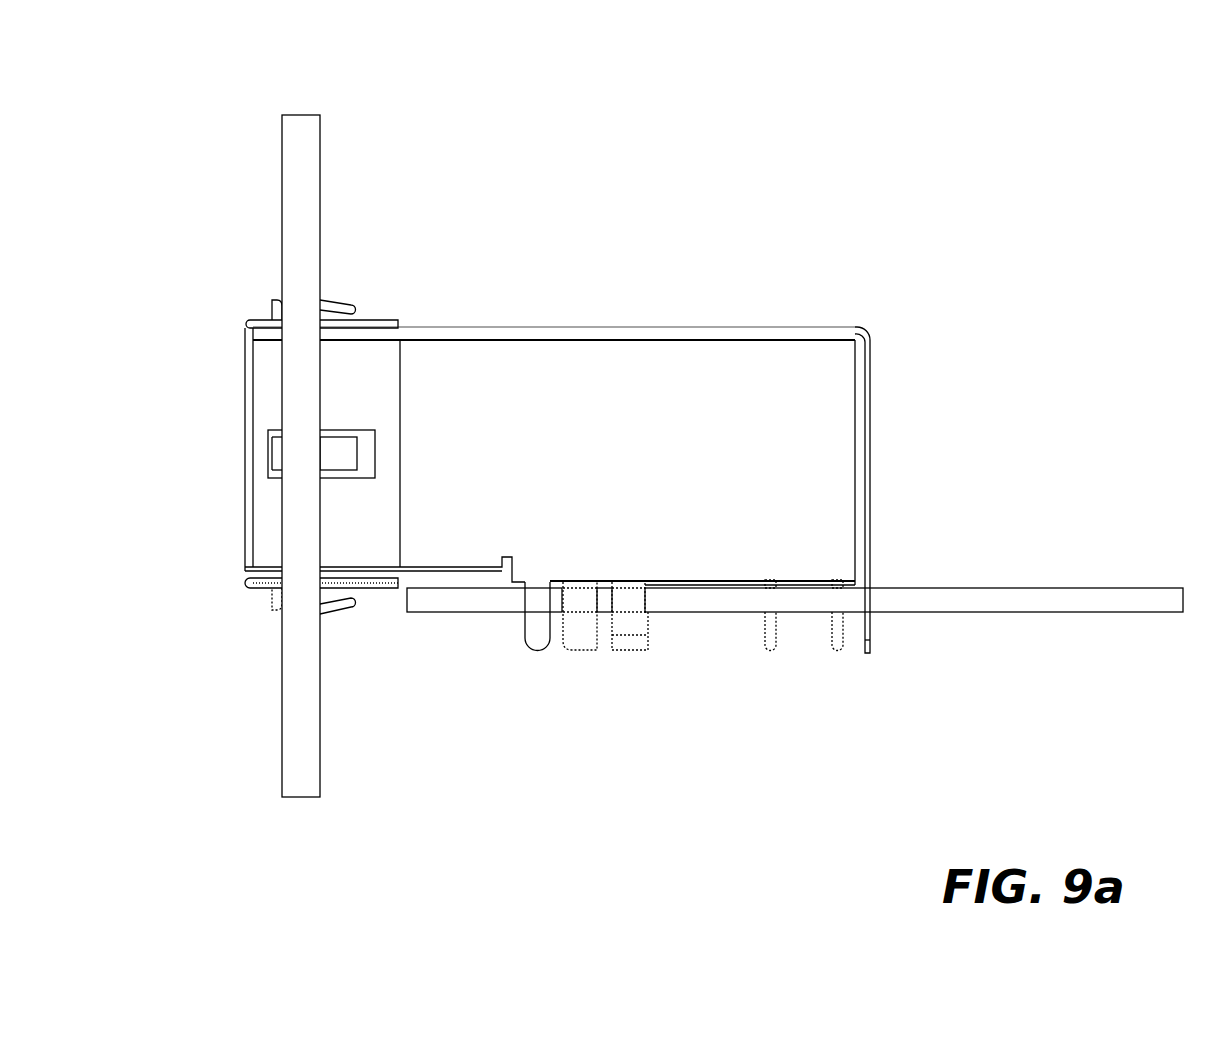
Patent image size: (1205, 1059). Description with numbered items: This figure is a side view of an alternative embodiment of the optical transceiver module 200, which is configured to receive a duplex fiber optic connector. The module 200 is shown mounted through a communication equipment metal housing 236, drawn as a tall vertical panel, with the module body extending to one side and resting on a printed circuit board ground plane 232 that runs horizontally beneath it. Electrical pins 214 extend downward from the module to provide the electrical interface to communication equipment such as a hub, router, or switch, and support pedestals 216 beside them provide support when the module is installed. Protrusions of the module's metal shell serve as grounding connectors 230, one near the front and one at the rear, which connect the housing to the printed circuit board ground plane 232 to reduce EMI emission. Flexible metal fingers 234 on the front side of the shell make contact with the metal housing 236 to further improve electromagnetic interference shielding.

The optical transceiver module 200 is at (925, 155).
The electrical pins 214 is at (837, 663).
The support pedestals 216 is at (652, 657).
The grounding connectors 230 is at (527, 662).
The printed circuit board ground plane 232 is at (1057, 580).
The flexible metal fingers 234 is at (350, 418).
The communication equipment metal housing 236 is at (276, 160).